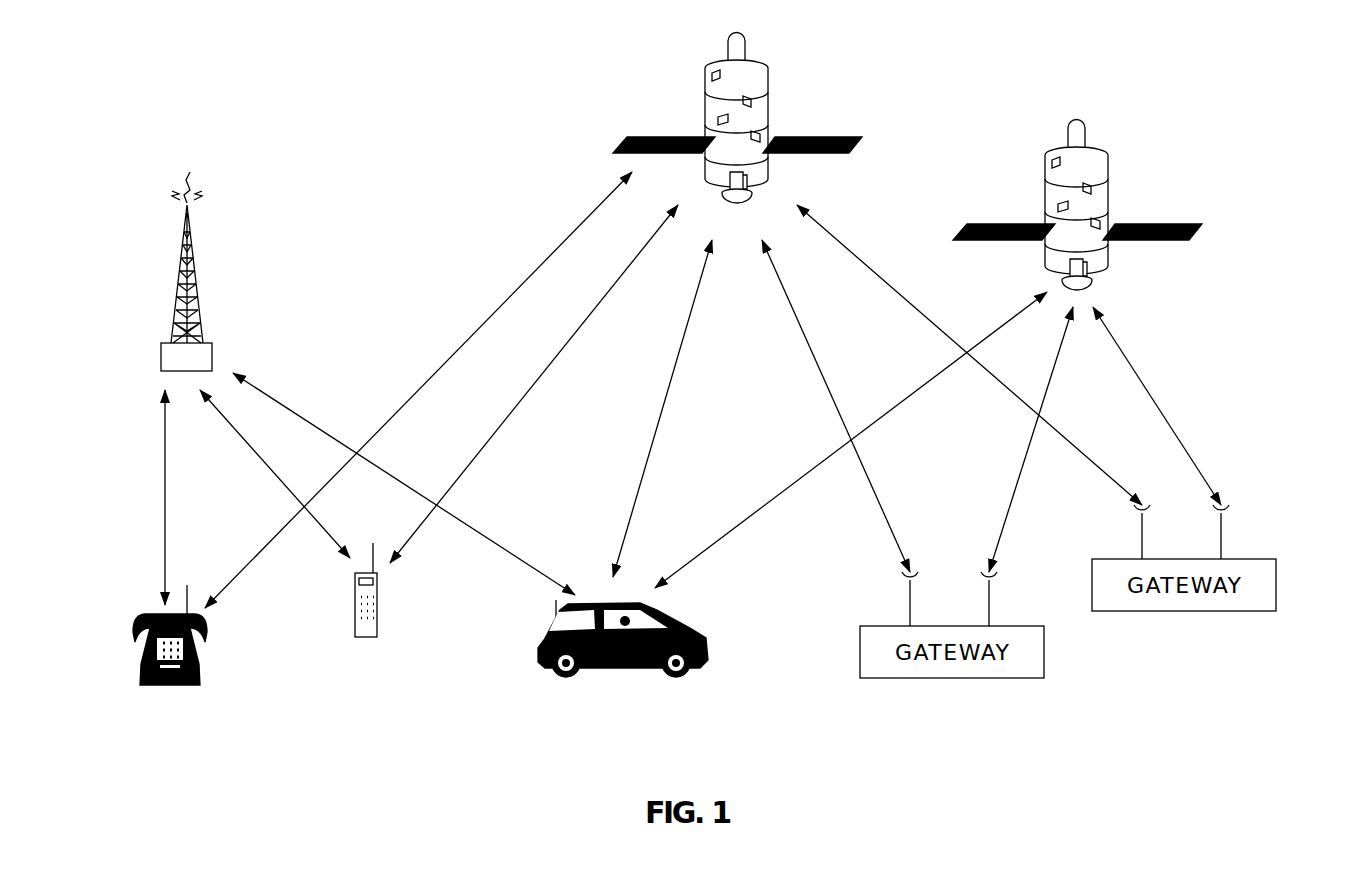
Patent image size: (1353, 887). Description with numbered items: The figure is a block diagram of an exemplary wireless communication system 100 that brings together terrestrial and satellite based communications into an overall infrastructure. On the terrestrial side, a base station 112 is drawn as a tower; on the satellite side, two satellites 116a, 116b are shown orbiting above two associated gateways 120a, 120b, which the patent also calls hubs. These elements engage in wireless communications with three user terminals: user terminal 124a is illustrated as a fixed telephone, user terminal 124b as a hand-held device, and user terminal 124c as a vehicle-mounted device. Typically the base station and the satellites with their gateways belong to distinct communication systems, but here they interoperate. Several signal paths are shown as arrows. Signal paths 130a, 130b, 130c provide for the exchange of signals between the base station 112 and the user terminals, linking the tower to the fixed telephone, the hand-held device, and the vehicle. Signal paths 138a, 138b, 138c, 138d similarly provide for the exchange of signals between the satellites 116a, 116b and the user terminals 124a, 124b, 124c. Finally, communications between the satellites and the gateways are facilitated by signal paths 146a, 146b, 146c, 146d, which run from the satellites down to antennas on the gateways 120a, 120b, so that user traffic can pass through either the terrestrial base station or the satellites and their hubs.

The wireless communication system 100 is at (387, 115).
The base station 112 is at (205, 343).
The satellite 116a is at (707, 68).
The satellite 116b is at (1104, 152).
The gateway 120a is at (860, 649).
The gateway 120b is at (1276, 581).
The user terminal 124a is at (141, 621).
The user terminal 124b is at (355, 621).
The user terminal 124c is at (541, 641).
The signal path 130a is at (120, 497).
The signal path 130b is at (263, 460).
The signal path 130c is at (285, 402).
The signal path 138a is at (530, 272).
The signal path 138b is at (572, 338).
The signal path 138c is at (680, 350).
The signal path 138d is at (822, 460).
The signal path 146a is at (812, 349).
The signal path 146b is at (915, 308).
The signal path 146c is at (1047, 393).
The signal path 146d is at (1144, 385).